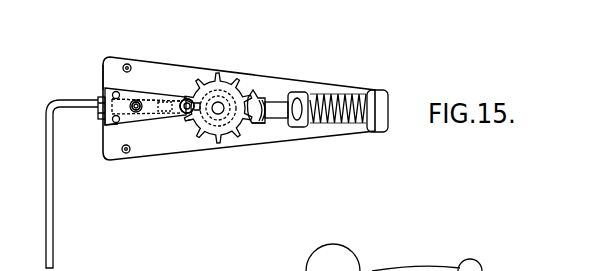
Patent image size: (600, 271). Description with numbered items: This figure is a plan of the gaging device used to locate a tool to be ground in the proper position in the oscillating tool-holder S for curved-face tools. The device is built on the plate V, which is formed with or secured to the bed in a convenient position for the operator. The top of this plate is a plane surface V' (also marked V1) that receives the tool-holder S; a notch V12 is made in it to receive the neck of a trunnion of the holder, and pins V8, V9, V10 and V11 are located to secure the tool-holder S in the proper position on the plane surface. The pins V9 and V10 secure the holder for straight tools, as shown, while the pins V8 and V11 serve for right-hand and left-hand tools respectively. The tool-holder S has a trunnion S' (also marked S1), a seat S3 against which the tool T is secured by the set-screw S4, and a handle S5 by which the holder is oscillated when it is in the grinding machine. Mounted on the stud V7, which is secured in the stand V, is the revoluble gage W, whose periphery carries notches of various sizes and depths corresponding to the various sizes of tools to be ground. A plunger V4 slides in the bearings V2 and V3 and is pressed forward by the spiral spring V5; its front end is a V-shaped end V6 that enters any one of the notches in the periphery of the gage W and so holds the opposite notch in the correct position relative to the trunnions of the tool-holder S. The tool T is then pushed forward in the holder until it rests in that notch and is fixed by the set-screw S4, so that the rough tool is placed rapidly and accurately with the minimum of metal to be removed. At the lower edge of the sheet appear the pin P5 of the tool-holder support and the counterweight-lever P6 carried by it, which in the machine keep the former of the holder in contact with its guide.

The handle S5 is at (53, 226).
The tool T is at (100, 104).
The oscillating tool-holder S is at (145, 116).
The plane surface V' is at (138, 126).
The plane surface V1 is at (136, 106).
The pin V10 is at (110, 122).
The set-screw S4 is at (172, 101).
The trunnion S' is at (184, 96).
The trunnion S1 is at (187, 106).
The seat S3 is at (190, 98).
The revoluble gage W is at (218, 110).
The stud V7 is at (218, 108).
The notch V12 is at (186, 124).
The V-shaped end V6 is at (257, 94).
The plate V is at (258, 134).
The plunger V4 is at (276, 110).
The bearing V2 is at (308, 94).
The spiral spring V5 is at (342, 96).
The bearing V3 is at (377, 111).
The pin V8 is at (127, 64).
The pin V11 is at (126, 153).
The pin V9 is at (103, 82).
The counterweight-lever P6 is at (352, 270).
The pin P5 is at (478, 268).